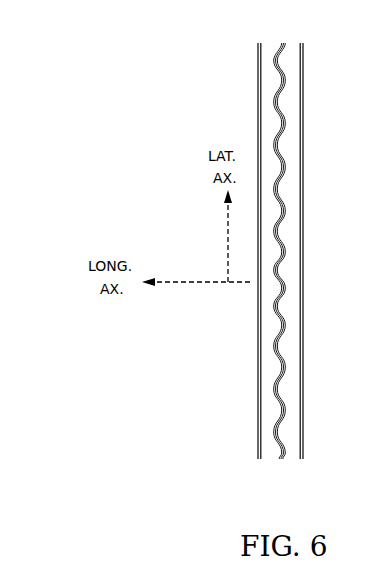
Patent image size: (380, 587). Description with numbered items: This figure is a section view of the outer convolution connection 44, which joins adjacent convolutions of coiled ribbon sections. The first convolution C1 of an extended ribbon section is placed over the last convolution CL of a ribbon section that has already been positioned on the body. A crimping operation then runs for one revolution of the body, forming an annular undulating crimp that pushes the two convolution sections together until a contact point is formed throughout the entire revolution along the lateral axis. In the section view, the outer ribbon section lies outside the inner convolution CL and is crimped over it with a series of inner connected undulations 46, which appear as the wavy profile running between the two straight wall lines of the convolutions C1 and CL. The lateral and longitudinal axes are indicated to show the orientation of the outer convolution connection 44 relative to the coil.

The outer convolution connection 44 is at (285, 211).
The inner connected undulations 46 is at (284, 280).
The first convolution of the extended ribbon section C1 is at (301, 461).
The last convolution of the positioned ribbon section CL is at (301, 461).